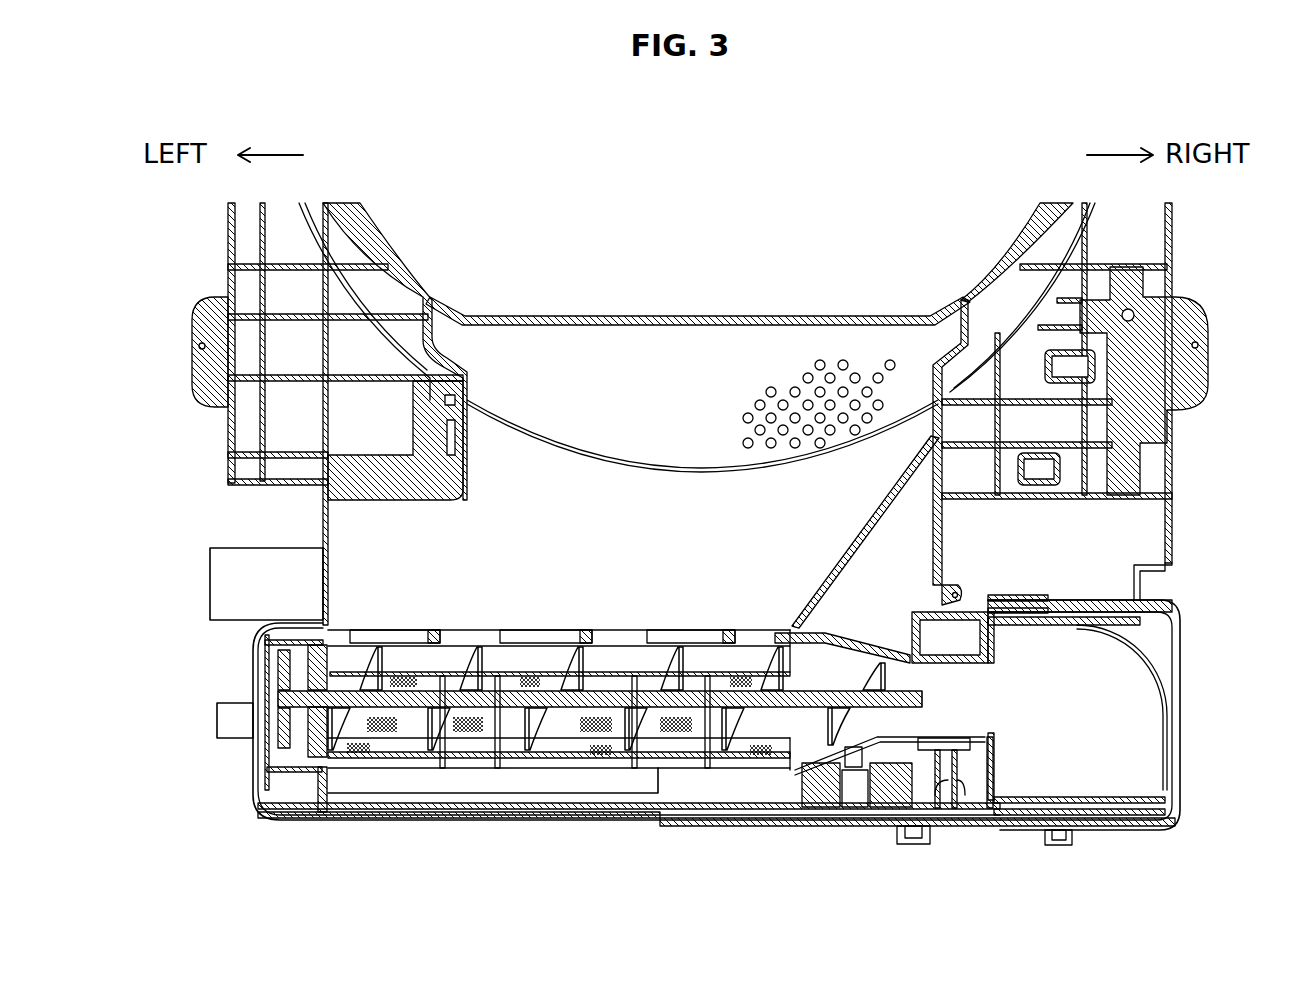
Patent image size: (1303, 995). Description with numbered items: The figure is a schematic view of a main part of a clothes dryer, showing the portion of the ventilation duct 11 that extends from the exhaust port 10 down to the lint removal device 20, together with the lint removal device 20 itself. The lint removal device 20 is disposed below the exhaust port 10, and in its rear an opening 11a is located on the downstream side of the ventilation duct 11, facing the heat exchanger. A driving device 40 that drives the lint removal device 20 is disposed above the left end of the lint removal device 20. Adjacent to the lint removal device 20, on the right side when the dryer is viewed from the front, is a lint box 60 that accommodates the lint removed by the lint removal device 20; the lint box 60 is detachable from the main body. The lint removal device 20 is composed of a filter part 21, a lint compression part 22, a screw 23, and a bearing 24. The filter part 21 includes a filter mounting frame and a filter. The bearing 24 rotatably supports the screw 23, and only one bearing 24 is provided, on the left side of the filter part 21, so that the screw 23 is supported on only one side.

The exhaust port 10 is at (686, 315).
The ventilation duct 11 is at (656, 545).
The opening 11a is at (420, 783).
The lint removal device 20 is at (705, 792).
The filter part 21 is at (595, 760).
The lint compression part 22 is at (880, 750).
The screw 23 is at (514, 690).
The bearing 24 is at (302, 752).
The driving device 40 is at (210, 583).
The lint box 60 is at (1137, 645).